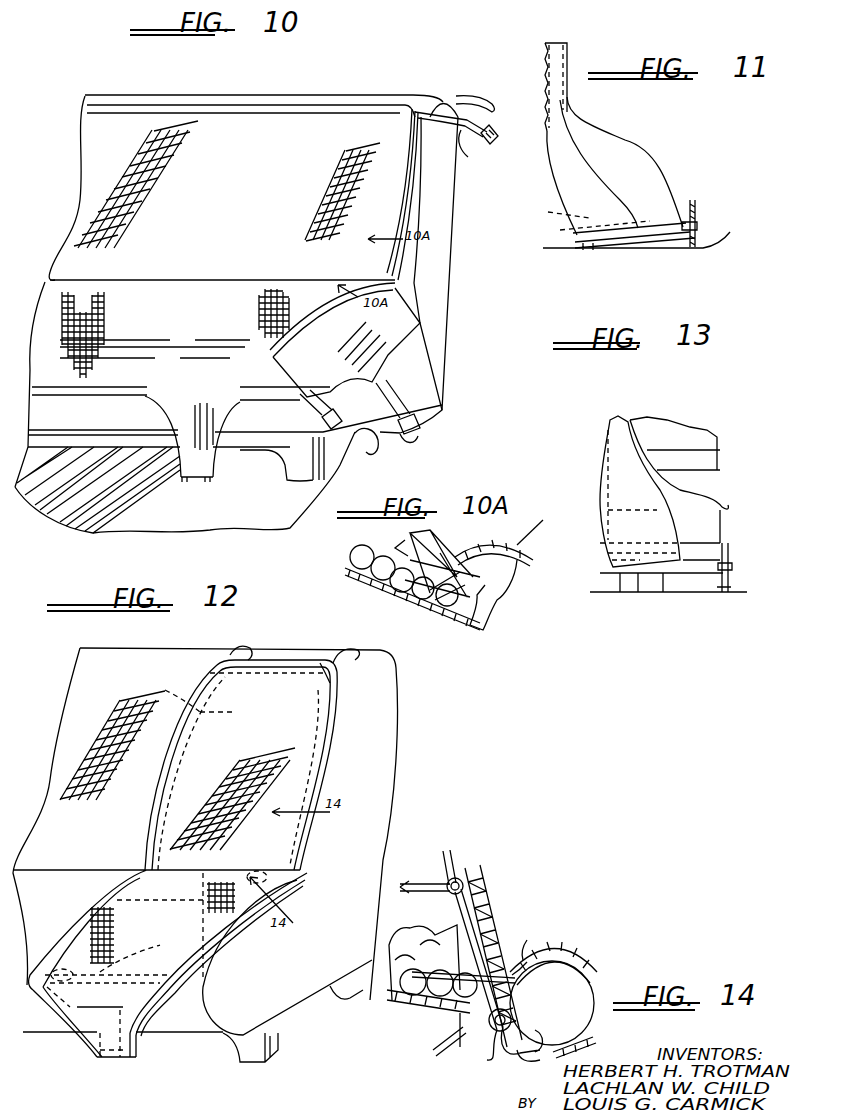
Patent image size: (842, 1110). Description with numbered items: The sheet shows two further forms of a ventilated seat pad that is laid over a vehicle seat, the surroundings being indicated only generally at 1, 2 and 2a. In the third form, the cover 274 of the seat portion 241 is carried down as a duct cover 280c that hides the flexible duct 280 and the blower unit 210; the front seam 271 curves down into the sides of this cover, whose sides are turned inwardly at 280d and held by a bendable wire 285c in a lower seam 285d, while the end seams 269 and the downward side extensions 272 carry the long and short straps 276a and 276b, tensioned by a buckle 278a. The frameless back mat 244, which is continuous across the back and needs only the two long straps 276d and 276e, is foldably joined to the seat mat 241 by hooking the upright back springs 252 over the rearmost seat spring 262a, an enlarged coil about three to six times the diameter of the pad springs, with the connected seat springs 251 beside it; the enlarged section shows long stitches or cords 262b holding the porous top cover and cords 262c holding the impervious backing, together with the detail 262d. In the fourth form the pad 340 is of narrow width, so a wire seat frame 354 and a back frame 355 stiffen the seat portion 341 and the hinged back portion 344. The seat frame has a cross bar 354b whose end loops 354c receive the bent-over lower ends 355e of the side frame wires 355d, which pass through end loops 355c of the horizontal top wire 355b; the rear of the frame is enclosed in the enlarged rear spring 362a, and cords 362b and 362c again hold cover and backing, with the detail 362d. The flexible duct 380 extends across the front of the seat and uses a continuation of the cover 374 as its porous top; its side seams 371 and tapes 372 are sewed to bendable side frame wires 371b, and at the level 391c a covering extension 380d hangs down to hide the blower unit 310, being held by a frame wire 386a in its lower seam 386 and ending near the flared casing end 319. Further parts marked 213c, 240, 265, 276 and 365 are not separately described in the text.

In FIG. 10, the seat assembly 1 is at (299, 82).
In FIG. 13, the seat assembly 1 is at (699, 482).
In FIG. 12, the seat assembly 1 is at (301, 1018).
In FIG. 10, the vehicle floor 2 is at (232, 538).
In FIG. 11, the vehicle floor 2 is at (645, 250).
In FIG. 13, the vehicle floor 2 is at (748, 585).
In FIG. 10, the base cushion 2a is at (97, 492).
In FIG. 10, the blower unit 210 is at (208, 488).
In FIG. 11, the blower unit 210 is at (683, 182).
In FIG. 11, the mounting bolt 213c is at (700, 230).
In FIG. 10, the seat back frame 240 is at (412, 222).
In FIG. 10, the seat portion 241 is at (298, 340).
In FIG. 10, the back portion 244 is at (397, 267).
In FIG. 10A, the seat springs 251 is at (356, 570).
In FIG. 10A, the upright back springs 252 is at (440, 548).
In FIG. 10A, the rearmost spring 262a is at (542, 531).
In FIG. 10A, the long stitches or cords 262b is at (455, 575).
In FIG. 10A, the long stitches or cords 262c is at (455, 598).
In FIG. 10A, the pad element 262d is at (429, 563).
In FIG. 10A, the lower lattice strip 265 is at (405, 592).
In FIG. 10, the end seams 269 is at (340, 306).
In FIG. 10, the front seam 271 is at (170, 397).
In FIG. 10, the extended cover sides 272 is at (417, 307).
In FIG. 10, the cover 274 is at (274, 197).
In FIG. 10A, the cover 274 is at (351, 530).
In FIG. 10, the fastener clip 276 is at (501, 127).
In FIG. 10, the long strap 276a is at (370, 455).
In FIG. 10, the short strap 276b is at (413, 440).
In FIG. 10, the long strap 276d is at (476, 96).
In FIG. 10, the long strap 276e is at (469, 157).
In FIG. 10, the buckle 278a is at (437, 430).
In FIG. 11, the flexible duct 280 is at (560, 53).
In FIG. 10, the duct cover 280c is at (173, 428).
In FIG. 11, the duct cover 280c is at (547, 88).
In FIG. 11, the inwardly turned sides 280d is at (593, 153).
In FIG. 11, the bendable wire 285c is at (606, 235).
In FIG. 11, the lower seam 285d is at (533, 233).
In FIG. 13, the blower unit 310 is at (729, 537).
In FIG. 12, the blower unit 310 is at (136, 1071).
In FIG. 13, the flared-out lower end 319 is at (603, 568).
In FIG. 12, the pad 340 is at (326, 766).
In FIG. 12, the seat portion 341 is at (80, 907).
In FIG. 12, the hinged back portion 344 is at (147, 838).
In FIG. 12, the seat frame 354 is at (120, 905).
In FIG. 12, the cross bar 354b is at (215, 915).
In FIG. 14, the cross bar 354b is at (470, 1012).
In FIG. 12, the loops 354c is at (265, 873).
In FIG. 14, the loops 354c is at (513, 1003).
In FIG. 12, the back frame 355 is at (235, 712).
In FIG. 12, the horizontal top wire 355b is at (325, 690).
In FIG. 14, the horizontal top wire 355b is at (447, 877).
In FIG. 12, the end loops 355c is at (205, 697).
In FIG. 14, the end loops 355c is at (482, 882).
In FIG. 12, the side frame wires 355d is at (352, 670).
In FIG. 14, the side frame wires 355d is at (462, 866).
In FIG. 14, the bent-over lower ends 355e is at (532, 1063).
In FIG. 14, the enlarged rear spring 362a is at (592, 962).
In FIG. 14, the long stitches or cords 362b is at (483, 962).
In FIG. 14, the long stitches or cords 362c is at (462, 1035).
In FIG. 14, the pad element 362d is at (435, 973).
In FIG. 14, the spring 365 is at (527, 962).
In FIG. 12, the duct side seams 371 is at (145, 1012).
In FIG. 12, the side frame wires 371b is at (52, 1008).
In FIG. 12, the tapes 372 is at (157, 1002).
In FIG. 14, the cover 374 is at (405, 940).
In FIG. 13, the flexible duct 380 is at (606, 428).
In FIG. 13, the blower unit covering extension 380d is at (600, 492).
In FIG. 12, the blower unit covering extension 380d is at (93, 1047).
In FIG. 13, the lower seam 386 is at (605, 547).
In FIG. 13, the bendable frame wire 386a is at (728, 547).
In FIG. 12, the bendable frame wire 386a is at (133, 1047).
In FIG. 12, the level 391c is at (84, 1022).